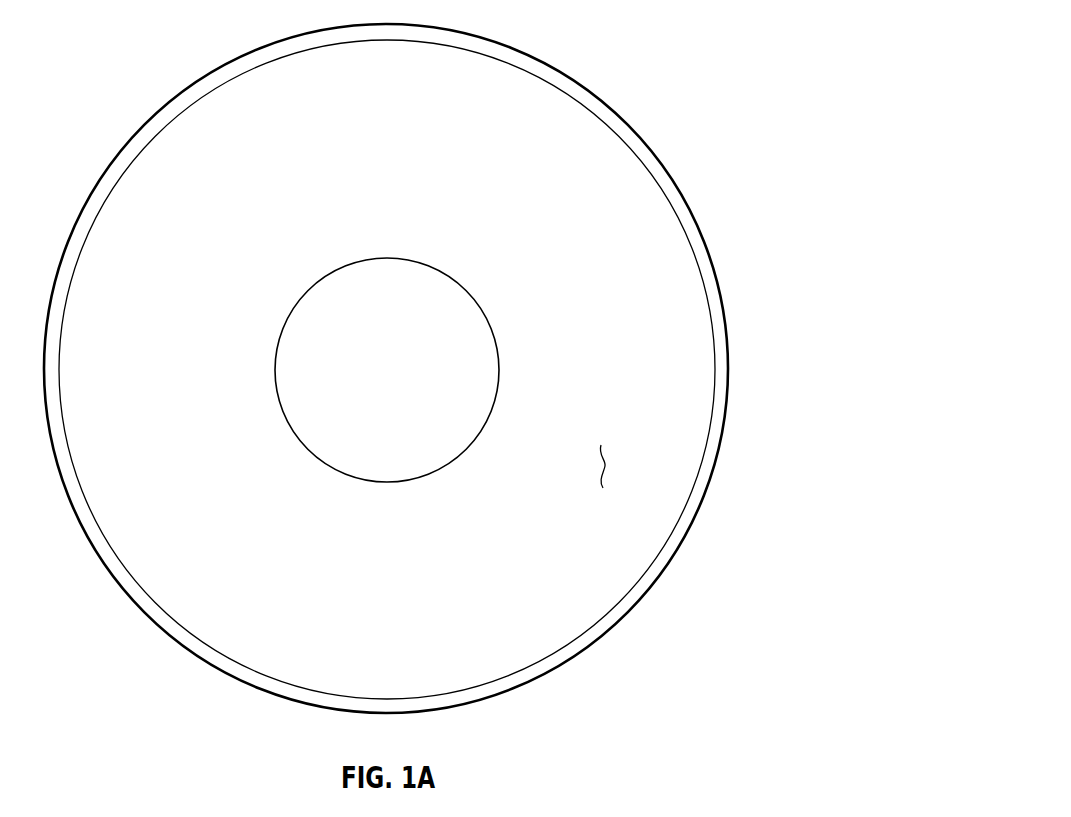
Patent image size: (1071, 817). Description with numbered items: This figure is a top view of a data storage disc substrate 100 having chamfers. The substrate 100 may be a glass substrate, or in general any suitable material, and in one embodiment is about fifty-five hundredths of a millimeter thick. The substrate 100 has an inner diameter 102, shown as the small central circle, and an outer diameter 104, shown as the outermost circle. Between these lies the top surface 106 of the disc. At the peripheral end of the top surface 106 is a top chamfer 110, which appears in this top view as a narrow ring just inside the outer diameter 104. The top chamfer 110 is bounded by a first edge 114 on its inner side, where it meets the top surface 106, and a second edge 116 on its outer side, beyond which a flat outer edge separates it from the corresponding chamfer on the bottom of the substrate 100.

The data storage disc substrate 100 is at (680, 40).
The inner diameter 102 is at (496, 348).
The outer diameter 104 is at (725, 300).
The top surface 106 is at (605, 466).
The top chamfer 110 is at (670, 542).
The first edge 114 is at (678, 530).
The second edge 116 is at (710, 490).